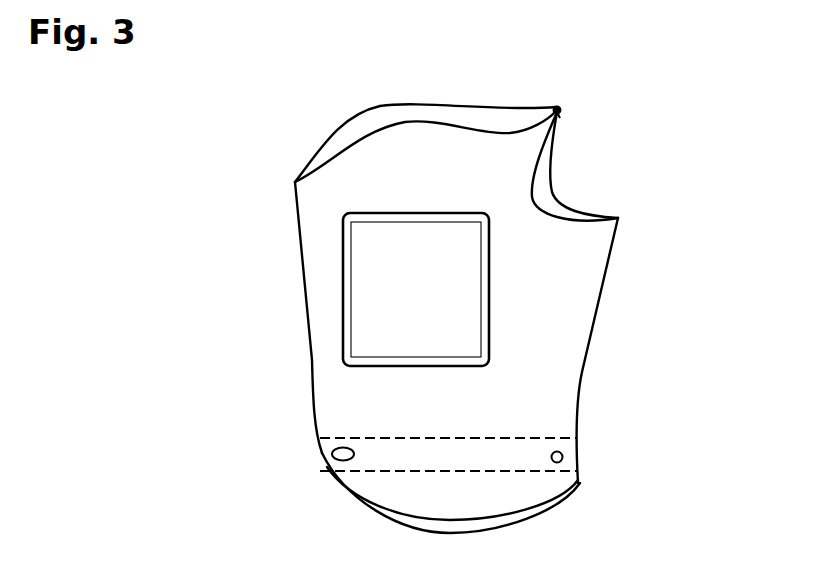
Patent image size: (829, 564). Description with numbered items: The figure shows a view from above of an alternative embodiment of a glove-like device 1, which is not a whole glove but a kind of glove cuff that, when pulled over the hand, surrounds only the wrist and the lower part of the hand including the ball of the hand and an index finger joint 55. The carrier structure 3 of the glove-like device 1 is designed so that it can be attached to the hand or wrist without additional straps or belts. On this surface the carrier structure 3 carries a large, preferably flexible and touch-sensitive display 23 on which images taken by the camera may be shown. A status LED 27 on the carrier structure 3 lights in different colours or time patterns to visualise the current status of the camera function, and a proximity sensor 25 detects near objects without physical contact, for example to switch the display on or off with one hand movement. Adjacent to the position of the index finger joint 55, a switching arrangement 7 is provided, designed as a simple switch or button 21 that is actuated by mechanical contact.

The glove-like device 1 is at (699, 231).
The carrier structure 3 is at (598, 315).
The switching arrangement 7 is at (571, 99).
The button 21 is at (557, 105).
The display 23 is at (340, 287).
The proximity sensor 25 is at (576, 455).
The status LED 27 is at (321, 453).
The index finger joint 55 is at (569, 125).